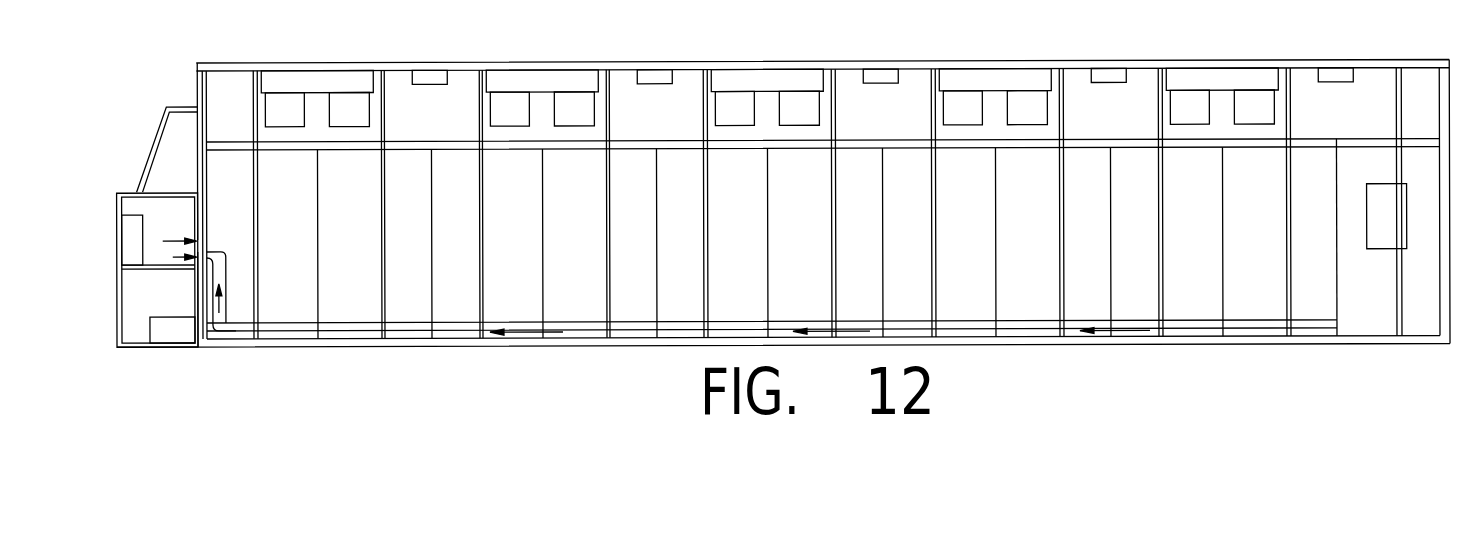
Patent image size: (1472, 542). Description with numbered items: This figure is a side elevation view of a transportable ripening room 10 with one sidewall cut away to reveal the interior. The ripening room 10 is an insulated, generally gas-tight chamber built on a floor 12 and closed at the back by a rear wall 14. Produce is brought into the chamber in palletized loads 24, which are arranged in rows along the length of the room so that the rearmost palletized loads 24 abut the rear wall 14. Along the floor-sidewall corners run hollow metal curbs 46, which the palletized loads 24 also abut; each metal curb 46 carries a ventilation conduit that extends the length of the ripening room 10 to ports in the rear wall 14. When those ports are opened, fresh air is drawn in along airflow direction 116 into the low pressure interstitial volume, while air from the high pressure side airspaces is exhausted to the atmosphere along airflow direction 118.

The ripening room 10 is at (1199, 44).
The floor 12 is at (565, 343).
The rear wall 14 is at (208, 86).
The palletized load 24 is at (1327, 300).
The metal curb 46 is at (985, 335).
The airflow direction 116 is at (172, 239).
The airflow direction 118 is at (226, 335).